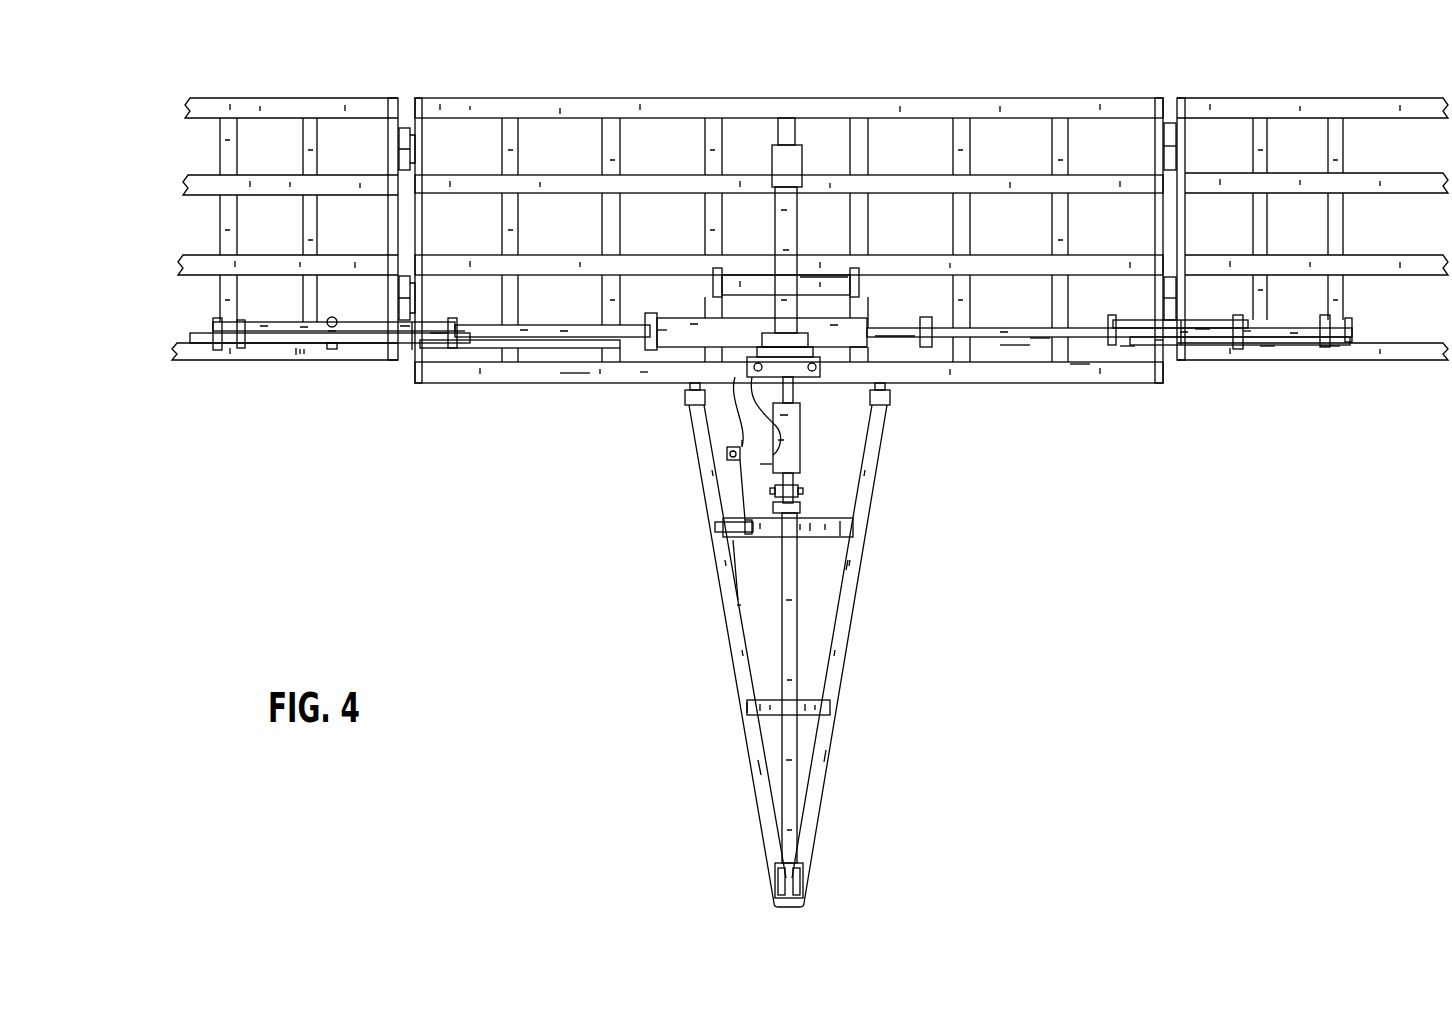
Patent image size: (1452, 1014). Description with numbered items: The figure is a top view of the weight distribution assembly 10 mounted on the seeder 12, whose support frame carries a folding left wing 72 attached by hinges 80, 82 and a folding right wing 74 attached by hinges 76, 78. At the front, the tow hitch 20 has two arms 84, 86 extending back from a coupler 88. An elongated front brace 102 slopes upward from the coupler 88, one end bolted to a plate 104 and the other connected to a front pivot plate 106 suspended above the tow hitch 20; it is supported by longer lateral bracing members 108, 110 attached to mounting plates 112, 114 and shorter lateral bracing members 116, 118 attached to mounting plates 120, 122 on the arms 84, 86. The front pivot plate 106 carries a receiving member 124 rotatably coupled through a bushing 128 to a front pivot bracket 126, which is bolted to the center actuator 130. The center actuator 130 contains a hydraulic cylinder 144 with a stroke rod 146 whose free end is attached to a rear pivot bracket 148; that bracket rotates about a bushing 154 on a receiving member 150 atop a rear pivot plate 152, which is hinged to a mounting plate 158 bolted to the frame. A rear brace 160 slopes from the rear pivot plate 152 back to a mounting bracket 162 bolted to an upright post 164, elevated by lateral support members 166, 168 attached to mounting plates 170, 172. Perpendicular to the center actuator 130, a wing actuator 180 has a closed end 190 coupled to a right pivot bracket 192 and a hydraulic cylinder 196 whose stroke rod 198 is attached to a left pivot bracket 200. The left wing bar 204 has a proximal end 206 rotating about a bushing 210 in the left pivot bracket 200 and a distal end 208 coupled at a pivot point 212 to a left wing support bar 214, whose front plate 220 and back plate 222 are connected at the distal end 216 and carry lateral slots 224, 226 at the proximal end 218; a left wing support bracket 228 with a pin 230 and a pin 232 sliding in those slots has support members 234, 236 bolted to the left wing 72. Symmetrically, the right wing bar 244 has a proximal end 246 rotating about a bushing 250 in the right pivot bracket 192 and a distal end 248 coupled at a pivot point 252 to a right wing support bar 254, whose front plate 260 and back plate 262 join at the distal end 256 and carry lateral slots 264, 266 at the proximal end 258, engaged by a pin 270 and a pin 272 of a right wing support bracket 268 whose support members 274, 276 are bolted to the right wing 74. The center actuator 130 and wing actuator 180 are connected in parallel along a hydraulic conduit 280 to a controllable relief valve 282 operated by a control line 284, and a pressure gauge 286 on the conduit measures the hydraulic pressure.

The weight distribution assembly 10 is at (847, 645).
The seeder 12 is at (581, 78).
The tow hitch 20 is at (771, 645).
The left wing 72 is at (1370, 268).
The right wing 74 is at (194, 318).
The hinge 76 is at (423, 318).
The hinge 78 is at (401, 128).
The hinge 80 is at (1186, 318).
The hinge 82 is at (1170, 123).
The arm 84 is at (832, 800).
The arm 86 is at (765, 800).
The coupler 88 is at (805, 880).
The elongated front brace 102 is at (800, 805).
The plate 104 is at (778, 882).
The front pivot plate 106 is at (855, 528).
The lateral bracing member 108 is at (832, 762).
The lateral bracing member 110 is at (758, 770).
The mounting plate 112 is at (835, 708).
The mounting plate 114 is at (750, 710).
The lateral bracing member 116 is at (858, 560).
The lateral bracing member 118 is at (752, 602).
The mounting plate 120 is at (862, 545).
The mounting plate 122 is at (734, 570).
The receiving member 124 is at (801, 508).
The front pivot bracket 126 is at (803, 491).
The bushing 128 is at (738, 535).
The center actuator 130 is at (741, 472).
The hydraulic cylinder 144 is at (740, 462).
The stroke rod 146 is at (732, 445).
The rear pivot bracket 148 is at (758, 471).
The receiving member 150 is at (801, 420).
The rear pivot plate 152 is at (812, 358).
The bushing 154 is at (740, 378).
The mounting plate 158 is at (822, 378).
The rear brace 160 is at (810, 285).
The mounting bracket 162 is at (775, 278).
The upright post 164 is at (787, 200).
The lateral support member 166 is at (802, 168).
The lateral support member 168 is at (718, 270).
The mounting plate 170 is at (858, 300).
The mounting plate 172 is at (700, 290).
The wing actuator 180 is at (862, 366).
The closed end 190 is at (657, 340).
The right pivot bracket 192 is at (642, 385).
The hydraulic cylinder 196 is at (948, 360).
The stroke rod 198 is at (928, 350).
The left pivot bracket 200 is at (966, 348).
The left wing bar 204 is at (1080, 366).
The proximal end 206 is at (1040, 348).
The distal end 208 is at (1100, 356).
The bushing 210 is at (1010, 360).
The pivot point 212 is at (1126, 362).
The left wing support bar 214 is at (1200, 347).
The distal end 216 is at (1268, 362).
The proximal end 218 is at (1150, 358).
The front plate 220 is at (1187, 362).
The back plate 222 is at (1152, 300).
The lateral slot 224 is at (1237, 362).
The lateral slot 226 is at (1216, 318).
The left wing support bracket 228 is at (1312, 348).
The pin 230 is at (1246, 342).
The pin 232 is at (1240, 318).
The support member 234 is at (1328, 362).
The support member 236 is at (1350, 345).
The right wing bar 244 is at (508, 342).
The proximal end 246 is at (642, 332).
The distal end 248 is at (485, 370).
The bushing 250 is at (578, 385).
The pivot point 252 is at (450, 348).
The right wing support bar 254 is at (377, 354).
The distal end 256 is at (325, 318).
The proximal end 258 is at (453, 330).
The front plate 260 is at (410, 362).
The back plate 262 is at (440, 325).
The lateral slot 264 is at (345, 350).
The lateral slot 266 is at (352, 325).
The right wing support bracket 268 is at (300, 362).
The pin 270 is at (333, 350).
The pin 272 is at (335, 322).
The support member 274 is at (243, 348).
The support member 276 is at (215, 365).
The hydraulic conduit 280 is at (755, 470).
The controllable relief valve 282 is at (745, 432).
The control line 284 is at (748, 600).
The pressure gauge 286 is at (731, 462).